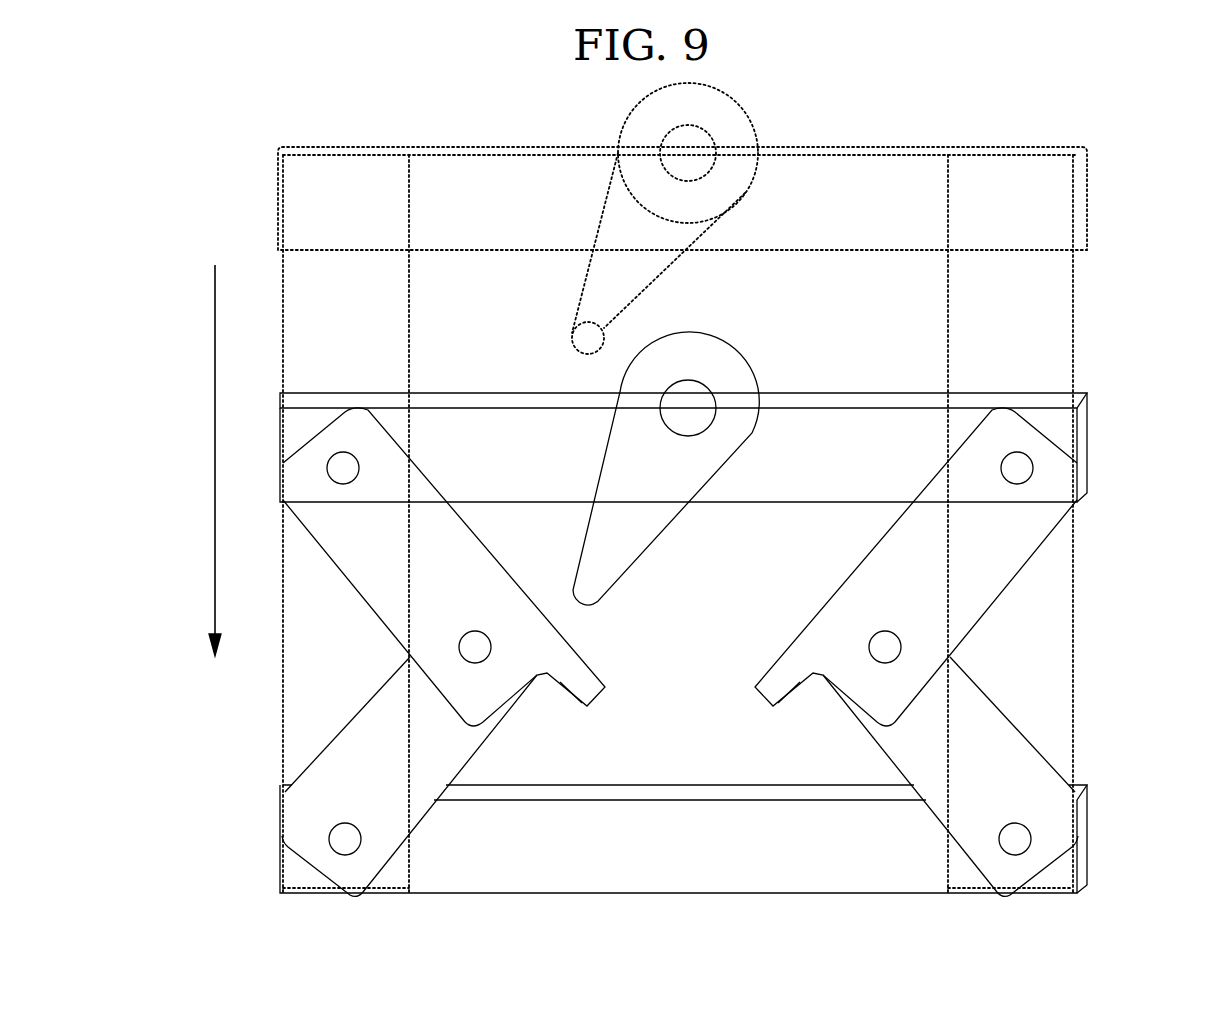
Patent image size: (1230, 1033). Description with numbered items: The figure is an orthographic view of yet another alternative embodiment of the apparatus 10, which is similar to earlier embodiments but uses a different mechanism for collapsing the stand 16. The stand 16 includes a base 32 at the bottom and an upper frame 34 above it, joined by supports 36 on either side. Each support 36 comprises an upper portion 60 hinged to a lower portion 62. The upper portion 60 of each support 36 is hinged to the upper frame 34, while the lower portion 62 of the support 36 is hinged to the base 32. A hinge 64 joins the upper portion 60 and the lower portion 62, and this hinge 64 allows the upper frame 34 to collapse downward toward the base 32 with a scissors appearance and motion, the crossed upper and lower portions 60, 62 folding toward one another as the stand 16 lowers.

The apparatus 10 is at (247, 163).
The stand 16 is at (1088, 473).
The base 32 is at (505, 893).
The upper frame 34 is at (1088, 423).
The support 36 is at (1111, 821).
The upper portion 60 is at (1033, 553).
The lower portion 62 is at (1007, 727).
The hinge 64 is at (885, 650).